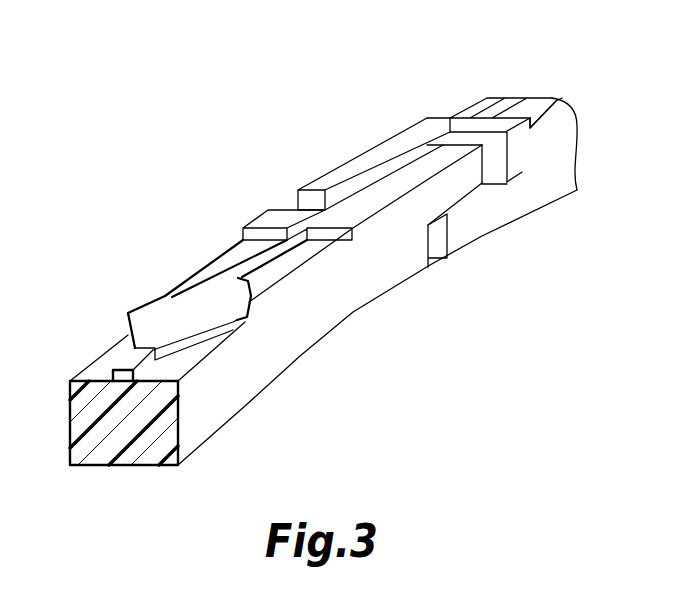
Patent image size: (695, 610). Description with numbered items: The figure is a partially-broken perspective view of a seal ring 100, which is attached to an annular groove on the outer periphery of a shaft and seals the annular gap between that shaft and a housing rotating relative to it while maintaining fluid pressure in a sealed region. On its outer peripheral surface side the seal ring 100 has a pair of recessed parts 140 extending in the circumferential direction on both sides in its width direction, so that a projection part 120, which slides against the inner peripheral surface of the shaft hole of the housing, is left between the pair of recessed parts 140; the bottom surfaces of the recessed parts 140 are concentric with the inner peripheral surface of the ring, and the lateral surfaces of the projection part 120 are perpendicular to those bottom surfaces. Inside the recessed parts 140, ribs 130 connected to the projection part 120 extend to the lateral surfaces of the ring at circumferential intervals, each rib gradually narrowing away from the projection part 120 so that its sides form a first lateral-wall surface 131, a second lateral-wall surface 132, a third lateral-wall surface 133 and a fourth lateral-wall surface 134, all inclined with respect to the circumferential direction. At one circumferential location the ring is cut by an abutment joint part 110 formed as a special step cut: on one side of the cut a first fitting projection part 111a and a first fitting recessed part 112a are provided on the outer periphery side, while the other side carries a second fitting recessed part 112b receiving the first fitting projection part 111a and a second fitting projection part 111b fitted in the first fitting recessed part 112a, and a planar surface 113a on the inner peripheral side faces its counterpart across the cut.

The seal ring 100 is at (146, 126).
The abutment joint part 110 is at (362, 114).
The first fitting projection part 111a is at (342, 175).
The second fitting projection part 111b is at (447, 195).
The first fitting recessed part 112a is at (493, 159).
The second fitting recessed part 112b is at (293, 208).
The planar surface 113a is at (438, 238).
The projection part 120 is at (127, 357).
The rib 130 is at (160, 300).
The first lateral-wall surface 131 is at (252, 294).
The second lateral-wall surface 132 is at (193, 283).
The third lateral-wall surface 133 is at (195, 340).
The fourth lateral-wall surface 134 is at (128, 331).
The recessed part 140 is at (100, 375).